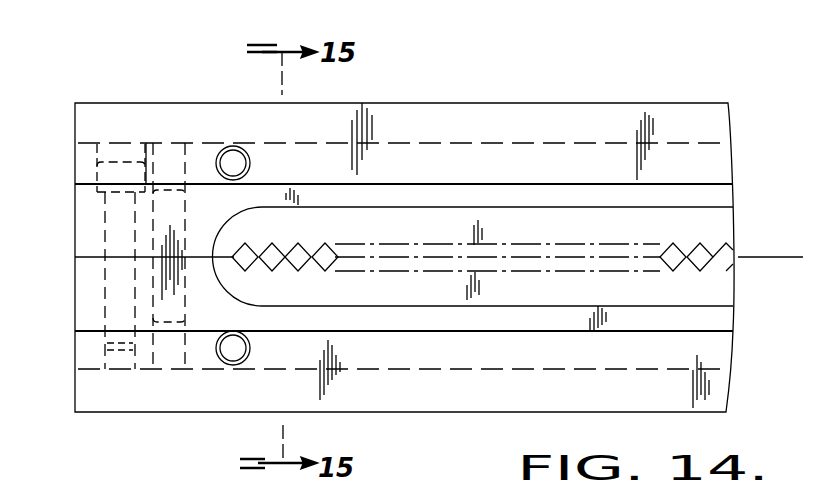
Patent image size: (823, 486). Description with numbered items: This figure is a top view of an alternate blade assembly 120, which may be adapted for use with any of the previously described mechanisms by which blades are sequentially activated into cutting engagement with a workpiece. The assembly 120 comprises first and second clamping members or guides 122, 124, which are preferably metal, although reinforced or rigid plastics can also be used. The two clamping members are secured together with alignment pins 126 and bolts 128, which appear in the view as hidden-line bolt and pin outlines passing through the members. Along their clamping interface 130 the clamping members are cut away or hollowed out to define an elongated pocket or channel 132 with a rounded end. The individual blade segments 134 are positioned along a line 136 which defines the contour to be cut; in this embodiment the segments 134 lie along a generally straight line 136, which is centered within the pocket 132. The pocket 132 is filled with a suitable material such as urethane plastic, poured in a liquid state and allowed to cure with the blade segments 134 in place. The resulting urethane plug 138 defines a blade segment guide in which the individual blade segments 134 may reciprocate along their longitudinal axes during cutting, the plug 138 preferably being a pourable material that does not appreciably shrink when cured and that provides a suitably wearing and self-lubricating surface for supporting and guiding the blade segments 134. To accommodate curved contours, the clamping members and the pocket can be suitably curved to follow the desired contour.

The alternate blade assembly 120 is at (404, 417).
The first clamping member 122 is at (218, 393).
The second clamping member 124 is at (182, 103).
The alignment pin 126 is at (172, 230).
The bolt 128 is at (120, 213).
The clamping interface 130 is at (84, 257).
The pocket 132 is at (494, 212).
The blade segment 134 is at (248, 266).
The line 136 is at (763, 258).
The urethane plug 138 is at (669, 216).